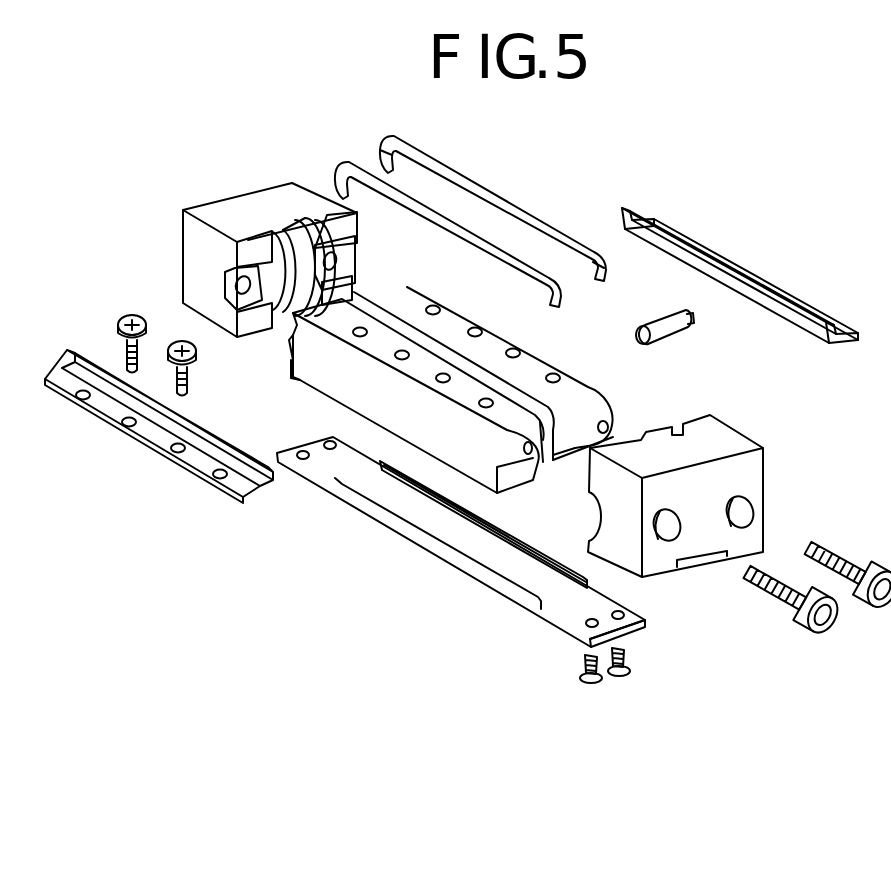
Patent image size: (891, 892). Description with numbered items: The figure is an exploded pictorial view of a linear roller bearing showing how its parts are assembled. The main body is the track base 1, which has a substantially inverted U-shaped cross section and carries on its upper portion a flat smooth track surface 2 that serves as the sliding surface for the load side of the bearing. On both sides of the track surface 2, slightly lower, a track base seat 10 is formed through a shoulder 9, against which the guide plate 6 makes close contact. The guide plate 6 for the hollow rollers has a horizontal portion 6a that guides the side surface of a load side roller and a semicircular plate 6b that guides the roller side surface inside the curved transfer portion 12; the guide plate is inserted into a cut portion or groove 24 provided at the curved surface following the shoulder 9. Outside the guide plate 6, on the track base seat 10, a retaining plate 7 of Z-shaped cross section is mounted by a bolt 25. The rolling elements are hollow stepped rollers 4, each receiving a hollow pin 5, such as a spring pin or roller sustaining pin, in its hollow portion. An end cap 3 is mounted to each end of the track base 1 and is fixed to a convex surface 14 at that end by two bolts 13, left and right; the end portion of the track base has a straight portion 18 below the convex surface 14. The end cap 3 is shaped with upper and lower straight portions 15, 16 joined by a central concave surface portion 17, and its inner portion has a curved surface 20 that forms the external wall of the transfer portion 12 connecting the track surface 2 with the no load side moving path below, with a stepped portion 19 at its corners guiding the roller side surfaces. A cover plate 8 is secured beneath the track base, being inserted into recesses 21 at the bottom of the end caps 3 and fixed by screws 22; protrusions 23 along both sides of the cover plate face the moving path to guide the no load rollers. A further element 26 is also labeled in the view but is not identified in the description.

The track base 1 is at (325, 397).
The track surface 2 is at (457, 345).
The end cap 3 is at (183, 222).
The hollow stepped roller 4 is at (675, 330).
The hollow pin 5 is at (645, 343).
The guide plate 6 is at (516, 195).
The horizontal portion 6a is at (447, 160).
The semicircular plate 6b is at (381, 142).
The retaining plate 7 is at (718, 255).
The cover plate 8 is at (443, 560).
The shoulder 9 is at (415, 345).
The track base seat 10 is at (418, 366).
The curved transfer portion 12 is at (683, 417).
The bolt 13 is at (770, 590).
The convex surface 14 is at (296, 333).
The upper straight portion 15 is at (246, 248).
The lower straight portion 16 is at (247, 328).
The central concave surface portion 17 is at (240, 297).
The straight portion 18 is at (293, 362).
The stepped portion 19 is at (307, 220).
The curved surface 20 is at (290, 222).
The recess 21 is at (698, 566).
The screw 22 is at (578, 668).
The protrusion 23 is at (405, 515).
The groove 24 is at (547, 443).
The bolt 25 is at (118, 325).
The bore 26 is at (538, 467).